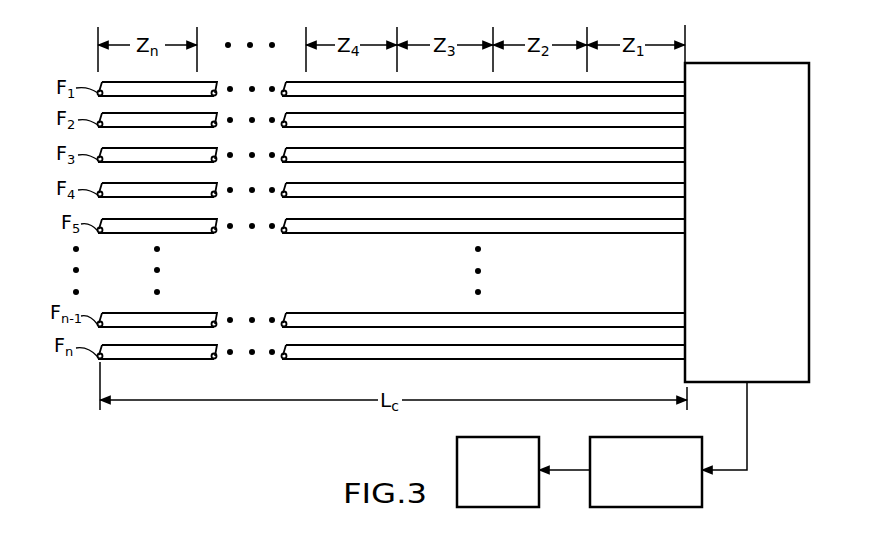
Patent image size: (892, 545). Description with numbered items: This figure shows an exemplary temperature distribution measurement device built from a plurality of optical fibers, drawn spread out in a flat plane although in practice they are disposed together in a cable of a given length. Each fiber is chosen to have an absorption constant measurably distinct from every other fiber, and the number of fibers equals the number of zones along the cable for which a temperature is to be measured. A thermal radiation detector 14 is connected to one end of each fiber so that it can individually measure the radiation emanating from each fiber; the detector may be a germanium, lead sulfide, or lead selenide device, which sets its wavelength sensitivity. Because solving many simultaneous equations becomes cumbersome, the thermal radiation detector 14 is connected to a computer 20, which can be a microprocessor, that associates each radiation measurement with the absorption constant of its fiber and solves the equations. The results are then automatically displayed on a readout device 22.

The thermal radiation detector 14 is at (753, 63).
The computer 20 is at (675, 437).
The readout device 22 is at (518, 437).